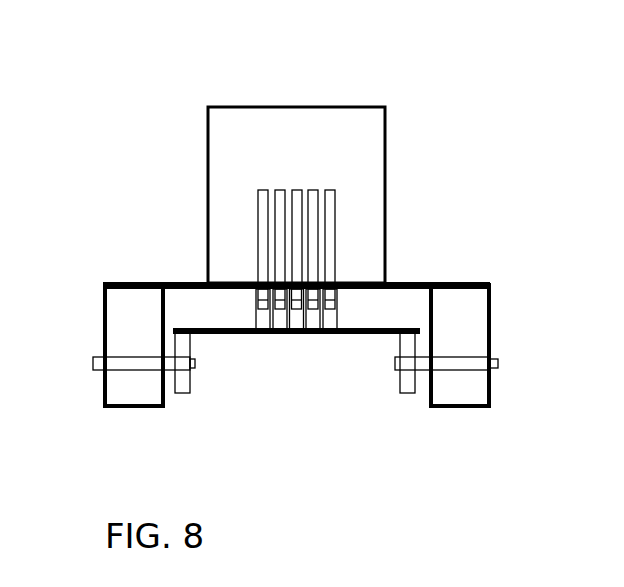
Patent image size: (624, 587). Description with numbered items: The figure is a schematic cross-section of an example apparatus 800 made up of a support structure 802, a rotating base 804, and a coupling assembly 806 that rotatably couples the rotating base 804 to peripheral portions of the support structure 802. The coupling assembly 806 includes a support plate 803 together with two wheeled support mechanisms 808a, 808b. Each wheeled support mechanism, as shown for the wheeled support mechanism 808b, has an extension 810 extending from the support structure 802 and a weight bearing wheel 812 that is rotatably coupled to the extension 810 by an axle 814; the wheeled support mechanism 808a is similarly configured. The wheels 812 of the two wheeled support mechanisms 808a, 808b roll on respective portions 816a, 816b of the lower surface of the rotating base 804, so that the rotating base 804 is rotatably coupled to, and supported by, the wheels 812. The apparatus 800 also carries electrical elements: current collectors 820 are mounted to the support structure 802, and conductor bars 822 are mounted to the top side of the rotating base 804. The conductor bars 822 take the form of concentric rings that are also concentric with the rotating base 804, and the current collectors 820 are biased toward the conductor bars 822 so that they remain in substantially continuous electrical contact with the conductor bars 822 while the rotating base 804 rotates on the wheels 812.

The apparatus 800 is at (170, 80).
The support structure 802 is at (325, 107).
The support plate 803 is at (190, 283).
The rotating base 804 is at (362, 334).
The coupling assembly 806 is at (497, 238).
The wheeled support mechanism 808a is at (72, 321).
The wheeled support mechanism 808b is at (514, 302).
The extension 810 is at (489, 388).
The weight bearing wheel 812 is at (406, 393).
The axle 814 is at (498, 362).
The portion of lower surface 816a is at (194, 312).
The portion of lower surface 816b is at (400, 311).
The current collectors 820 is at (338, 232).
The conductor bars 822 is at (256, 318).